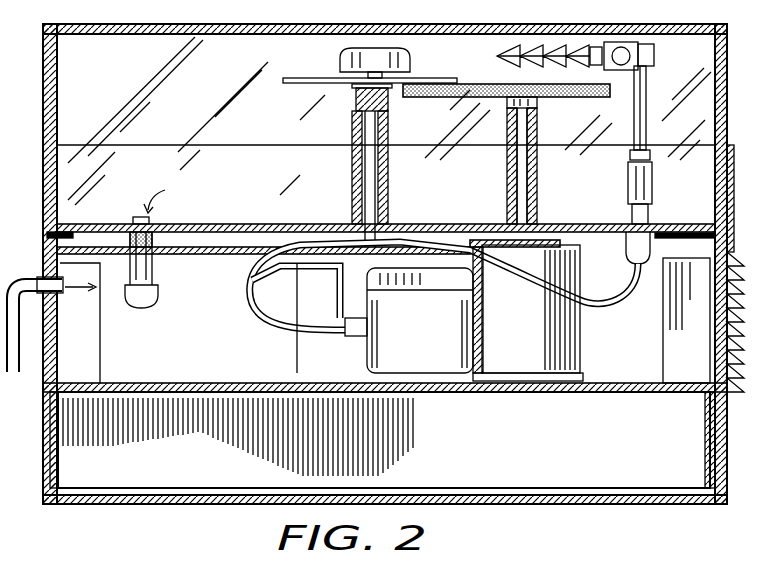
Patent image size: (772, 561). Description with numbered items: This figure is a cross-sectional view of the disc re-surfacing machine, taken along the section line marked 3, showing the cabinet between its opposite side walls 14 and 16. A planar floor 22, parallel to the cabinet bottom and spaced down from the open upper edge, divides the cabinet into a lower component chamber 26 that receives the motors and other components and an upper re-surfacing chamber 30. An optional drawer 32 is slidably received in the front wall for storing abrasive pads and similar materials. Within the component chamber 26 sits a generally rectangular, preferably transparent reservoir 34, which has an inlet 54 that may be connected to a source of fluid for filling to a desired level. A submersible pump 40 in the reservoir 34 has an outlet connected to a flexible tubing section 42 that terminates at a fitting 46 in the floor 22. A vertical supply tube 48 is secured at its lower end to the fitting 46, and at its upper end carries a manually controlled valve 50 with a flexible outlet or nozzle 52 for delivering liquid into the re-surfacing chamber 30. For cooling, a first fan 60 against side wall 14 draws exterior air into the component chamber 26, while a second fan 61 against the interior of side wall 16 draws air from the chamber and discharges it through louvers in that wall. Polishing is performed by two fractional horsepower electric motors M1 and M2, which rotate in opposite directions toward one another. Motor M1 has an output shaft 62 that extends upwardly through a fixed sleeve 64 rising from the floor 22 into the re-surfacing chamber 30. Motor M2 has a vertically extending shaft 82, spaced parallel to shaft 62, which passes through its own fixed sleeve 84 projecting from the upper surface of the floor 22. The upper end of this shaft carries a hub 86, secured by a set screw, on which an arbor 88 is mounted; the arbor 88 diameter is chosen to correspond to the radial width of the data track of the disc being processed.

The section line 3- 3 is at (31, 55).
The side wall 14 is at (52, 137).
The side wall 16 is at (732, 264).
The floor 22 is at (248, 222).
The component chamber 26 is at (616, 347).
The re-surfacing chamber 30 is at (386, 121).
The drawer 32 is at (56, 455).
The reservoir 34 is at (211, 295).
The submersible pump 40 is at (420, 320).
The flexible tubing section 42 is at (631, 290).
The fitting 46 is at (652, 204).
The supply tube 48 is at (646, 92).
The manually controlled valve 50 is at (648, 50).
The nozzle 52 is at (512, 58).
The inlet 54 is at (62, 291).
The first fan 60 is at (100, 328).
The second fan 61 is at (687, 258).
The output shaft 62 is at (362, 164).
The fixed sleeve 64 is at (388, 200).
The shaft 82 is at (507, 190).
The fixed sleeve 84 is at (507, 155).
The hub 86 is at (505, 97).
The arbor 88 is at (553, 98).
The motor M1 is at (331, 203).
The motor M2 is at (528, 313).